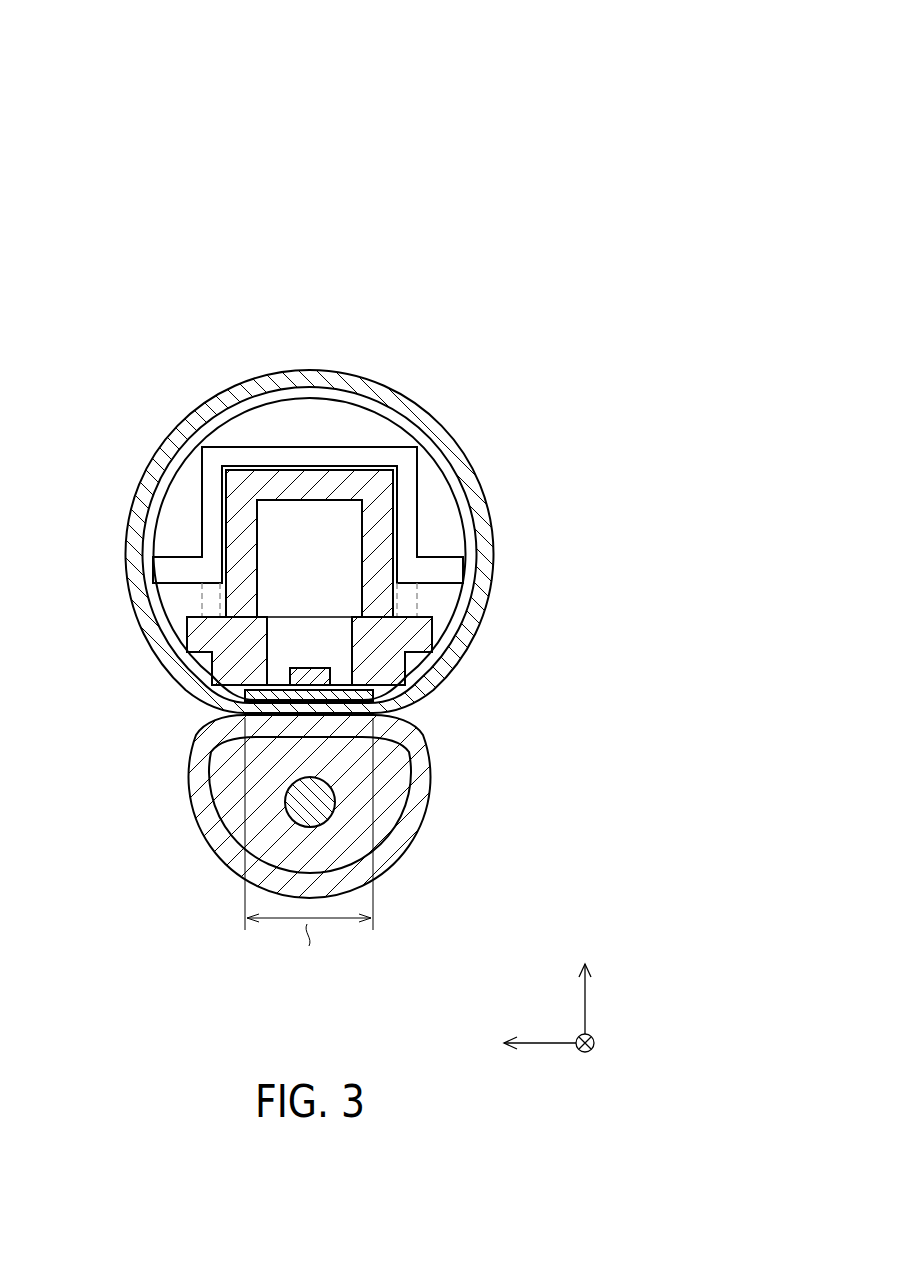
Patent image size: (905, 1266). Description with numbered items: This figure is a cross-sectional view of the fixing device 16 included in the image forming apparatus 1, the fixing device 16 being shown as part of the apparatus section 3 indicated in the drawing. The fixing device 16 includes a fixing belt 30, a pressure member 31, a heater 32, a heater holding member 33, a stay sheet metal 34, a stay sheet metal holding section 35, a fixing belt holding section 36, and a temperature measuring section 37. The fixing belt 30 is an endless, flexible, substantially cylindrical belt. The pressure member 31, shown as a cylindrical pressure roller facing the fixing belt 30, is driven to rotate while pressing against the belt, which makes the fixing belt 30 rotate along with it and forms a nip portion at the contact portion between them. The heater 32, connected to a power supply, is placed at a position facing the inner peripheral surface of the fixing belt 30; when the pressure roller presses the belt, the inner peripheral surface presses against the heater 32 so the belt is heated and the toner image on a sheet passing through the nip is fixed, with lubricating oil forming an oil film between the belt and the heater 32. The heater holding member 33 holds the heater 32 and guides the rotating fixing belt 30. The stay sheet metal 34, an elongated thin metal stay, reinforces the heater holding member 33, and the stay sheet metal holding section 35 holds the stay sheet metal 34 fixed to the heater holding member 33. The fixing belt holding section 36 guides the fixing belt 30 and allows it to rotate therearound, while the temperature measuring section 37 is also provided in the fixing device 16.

The image forming apparatus 1 is at (452, 86).
The fixing device 3 is at (407, 211).
The fixing device 16 is at (359, 321).
The fixing belt 30 is at (470, 461).
The pressure member 31 is at (400, 862).
The heater 32 is at (380, 690).
The heater holding member 33 is at (433, 627).
The stay sheet metal 34 is at (294, 500).
The stay sheet metal holding section 35 is at (202, 516).
The fixing belt holding section 36 is at (476, 522).
The temperature measuring section 37 is at (300, 668).